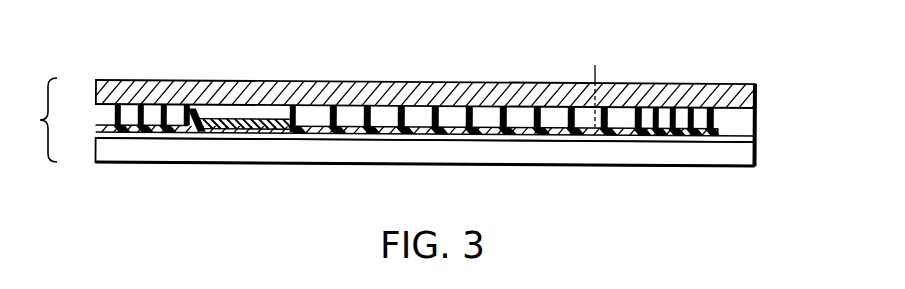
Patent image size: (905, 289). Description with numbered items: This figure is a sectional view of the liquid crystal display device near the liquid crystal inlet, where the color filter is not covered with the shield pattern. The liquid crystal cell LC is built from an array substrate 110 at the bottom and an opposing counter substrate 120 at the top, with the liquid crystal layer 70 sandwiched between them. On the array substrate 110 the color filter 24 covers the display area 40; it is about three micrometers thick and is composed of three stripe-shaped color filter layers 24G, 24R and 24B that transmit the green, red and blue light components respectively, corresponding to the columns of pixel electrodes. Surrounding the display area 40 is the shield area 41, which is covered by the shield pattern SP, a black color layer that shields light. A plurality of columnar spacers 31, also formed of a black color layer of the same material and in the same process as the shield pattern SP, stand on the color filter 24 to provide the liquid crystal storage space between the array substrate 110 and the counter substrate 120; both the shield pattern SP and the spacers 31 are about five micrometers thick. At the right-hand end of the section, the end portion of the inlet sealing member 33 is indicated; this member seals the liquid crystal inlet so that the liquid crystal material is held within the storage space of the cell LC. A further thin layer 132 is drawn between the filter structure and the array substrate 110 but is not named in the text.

The counter substrate 120 is at (759, 102).
The array substrate 110 is at (758, 152).
The alignment film / electrode layer 132 is at (754, 126).
The liquid crystal layer 70 is at (93, 105).
The liquid crystal cell LC is at (33, 120).
The columnar spacer 31 is at (414, 119).
The shield pattern SP is at (248, 124).
The color filter 24 is at (428, 130).
The green color filter layer 24G is at (122, 128).
The red color filter layer 24R is at (168, 128).
The blue color filter layer 24B is at (439, 130).
The display area 40 is at (204, 80).
The shield area 41 is at (627, 85).
The inlet sealing member 33 is at (595, 66).